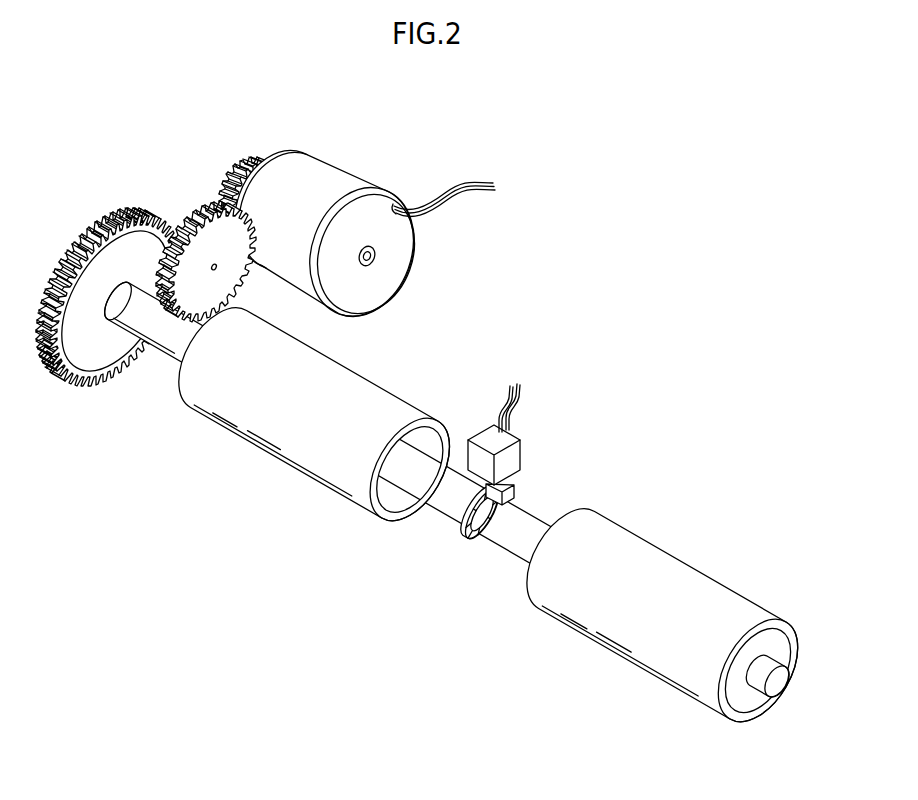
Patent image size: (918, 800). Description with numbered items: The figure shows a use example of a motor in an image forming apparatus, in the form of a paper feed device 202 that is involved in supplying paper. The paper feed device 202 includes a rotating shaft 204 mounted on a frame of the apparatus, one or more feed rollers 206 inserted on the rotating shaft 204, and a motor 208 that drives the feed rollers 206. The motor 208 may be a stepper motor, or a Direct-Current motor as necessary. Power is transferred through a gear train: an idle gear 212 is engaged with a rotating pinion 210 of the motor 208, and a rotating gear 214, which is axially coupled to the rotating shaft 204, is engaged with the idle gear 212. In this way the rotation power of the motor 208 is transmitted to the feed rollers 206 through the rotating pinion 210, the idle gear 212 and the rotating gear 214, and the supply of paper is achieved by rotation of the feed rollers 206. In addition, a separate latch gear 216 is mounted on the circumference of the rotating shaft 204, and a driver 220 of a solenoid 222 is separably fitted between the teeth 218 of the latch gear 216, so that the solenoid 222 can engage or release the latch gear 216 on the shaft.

The paper feed device 202 is at (639, 290).
The rotating shaft 204 is at (442, 502).
The feed rollers 206 is at (313, 468).
The motor 208 is at (363, 297).
The rotating pinion 210 is at (247, 163).
The idle gear 212 is at (193, 209).
The rotating gear 214 is at (88, 228).
The latch gear 216 is at (462, 518).
The teeth 218 is at (441, 535).
The driver 220 is at (502, 487).
The solenoid 222 is at (508, 462).